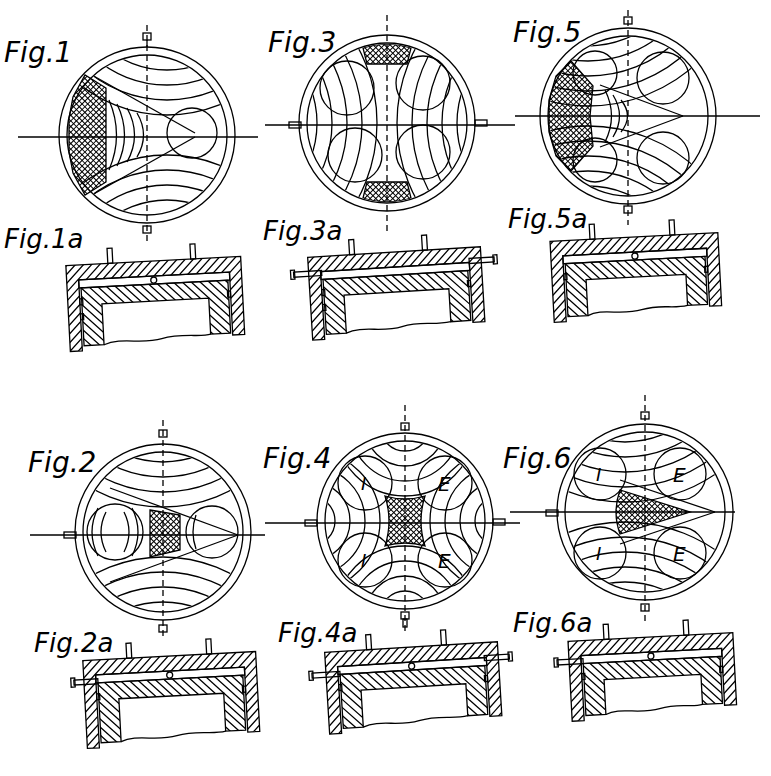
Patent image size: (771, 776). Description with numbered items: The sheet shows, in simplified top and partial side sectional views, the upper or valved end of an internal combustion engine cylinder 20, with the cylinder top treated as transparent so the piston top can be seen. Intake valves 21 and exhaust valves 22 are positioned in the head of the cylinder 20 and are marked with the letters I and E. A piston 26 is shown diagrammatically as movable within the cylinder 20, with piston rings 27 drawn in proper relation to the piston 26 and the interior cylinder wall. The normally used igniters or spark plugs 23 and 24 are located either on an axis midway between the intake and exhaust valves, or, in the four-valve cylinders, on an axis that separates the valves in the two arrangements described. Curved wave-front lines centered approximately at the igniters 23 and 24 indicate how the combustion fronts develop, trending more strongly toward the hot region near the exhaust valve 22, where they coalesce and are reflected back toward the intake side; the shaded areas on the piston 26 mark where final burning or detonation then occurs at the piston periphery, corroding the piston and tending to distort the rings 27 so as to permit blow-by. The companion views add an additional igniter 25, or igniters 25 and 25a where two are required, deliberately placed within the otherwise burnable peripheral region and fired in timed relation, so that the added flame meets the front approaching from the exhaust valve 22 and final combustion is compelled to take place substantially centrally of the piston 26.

In FIG. 1, the cylinder 20 is at (198, 70).
In FIG. 3, the cylinder 20 is at (470, 104).
In FIG. 5, the cylinder 20 is at (714, 106).
In FIG. 2, the cylinder 20 is at (163, 532).
In FIG. 4, the cylinder 20 is at (405, 521).
In FIG. 6, the cylinder 20 is at (645, 512).
In FIG. 1A, the cylinder 20 is at (70, 340).
In FIG. 3A, the cylinder 20 is at (312, 326).
In FIG. 5A, the cylinder 20 is at (722, 298).
In FIG. 2A, the cylinder 20 is at (88, 735).
In FIG. 4A, the cylinder 20 is at (413, 652).
In FIG. 6A, the cylinder 20 is at (632, 647).
In FIG. 1, the intake valve 21 is at (76, 160).
In FIG. 3, the intake valve 21 is at (330, 72).
In FIG. 5, the intake valve 21 is at (570, 70).
In FIG. 2, the intake valve 21 is at (115, 532).
In FIG. 1A, the intake valve 21 is at (110, 256).
In FIG. 3A, the intake valve 21 is at (352, 250).
In FIG. 5A, the intake valve 21 is at (591, 245).
In FIG. 1, the exhaust valve 22 is at (212, 120).
In FIG. 3, the exhaust valve 22 is at (440, 70).
In FIG. 5, the exhaust valve 22 is at (690, 70).
In FIG. 2, the exhaust valve 22 is at (212, 532).
In FIG. 1A, the exhaust valve 22 is at (208, 260).
In FIG. 3A, the exhaust valve 22 is at (438, 252).
In FIG. 5A, the exhaust valve 22 is at (688, 240).
In FIG. 1, the igniter 23 is at (152, 40).
In FIG. 3, the igniter 23 is at (296, 129).
In FIG. 5, the igniter 23 is at (633, 23).
In FIG. 2, the igniter 23 is at (167, 442).
In FIG. 4, the igniter 23 is at (310, 528).
In FIG. 6, the igniter 23 is at (650, 418).
In FIG. 1A, the igniter 23 is at (157, 283).
In FIG. 3A, the igniter 23 is at (300, 271).
In FIG. 5A, the igniter 23 is at (640, 262).
In FIG. 2A, the igniter 23 is at (173, 680).
In FIG. 4A, the igniter 23 is at (318, 672).
In FIG. 6A, the igniter 23 is at (655, 661).
In FIG. 1, the igniter 24 is at (152, 229).
In FIG. 3, the igniter 24 is at (482, 128).
In FIG. 5, the igniter 24 is at (634, 209).
In FIG. 2, the igniter 24 is at (168, 629).
In FIG. 4, the igniter 24 is at (497, 527).
In FIG. 6, the igniter 24 is at (650, 608).
In FIG. 3A, the igniter 24 is at (490, 268).
In FIG. 4A, the igniter 24 is at (500, 667).
In FIG. 2, the additional igniter 25 is at (70, 538).
In FIG. 4, the additional igniter 25 is at (410, 427).
In FIG. 6, the additional igniter 25 is at (556, 511).
In FIG. 2A, the additional igniter 25 is at (78, 681).
In FIG. 4A, the additional igniter 25 is at (416, 669).
In FIG. 6A, the additional igniter 25 is at (565, 662).
In FIG. 4, the additional igniter 25a is at (410, 617).
In FIG. 1, the piston 26 is at (90, 80).
In FIG. 3, the piston 26 is at (398, 62).
In FIG. 5, the piston 26 is at (660, 50).
In FIG. 2, the piston 26 is at (205, 470).
In FIG. 4, the piston 26 is at (430, 455).
In FIG. 6, the piston 26 is at (675, 447).
In FIG. 1A, the piston 26 is at (92, 345).
In FIG. 3A, the piston 26 is at (352, 336).
In FIG. 5A, the piston 26 is at (690, 310).
In FIG. 2A, the piston 26 is at (110, 742).
In FIG. 4A, the piston 26 is at (413, 652).
In FIG. 6A, the piston 26 is at (632, 647).
In FIG. 1A, the piston ring 27 is at (78, 292).
In FIG. 3A, the piston ring 27 is at (320, 288).